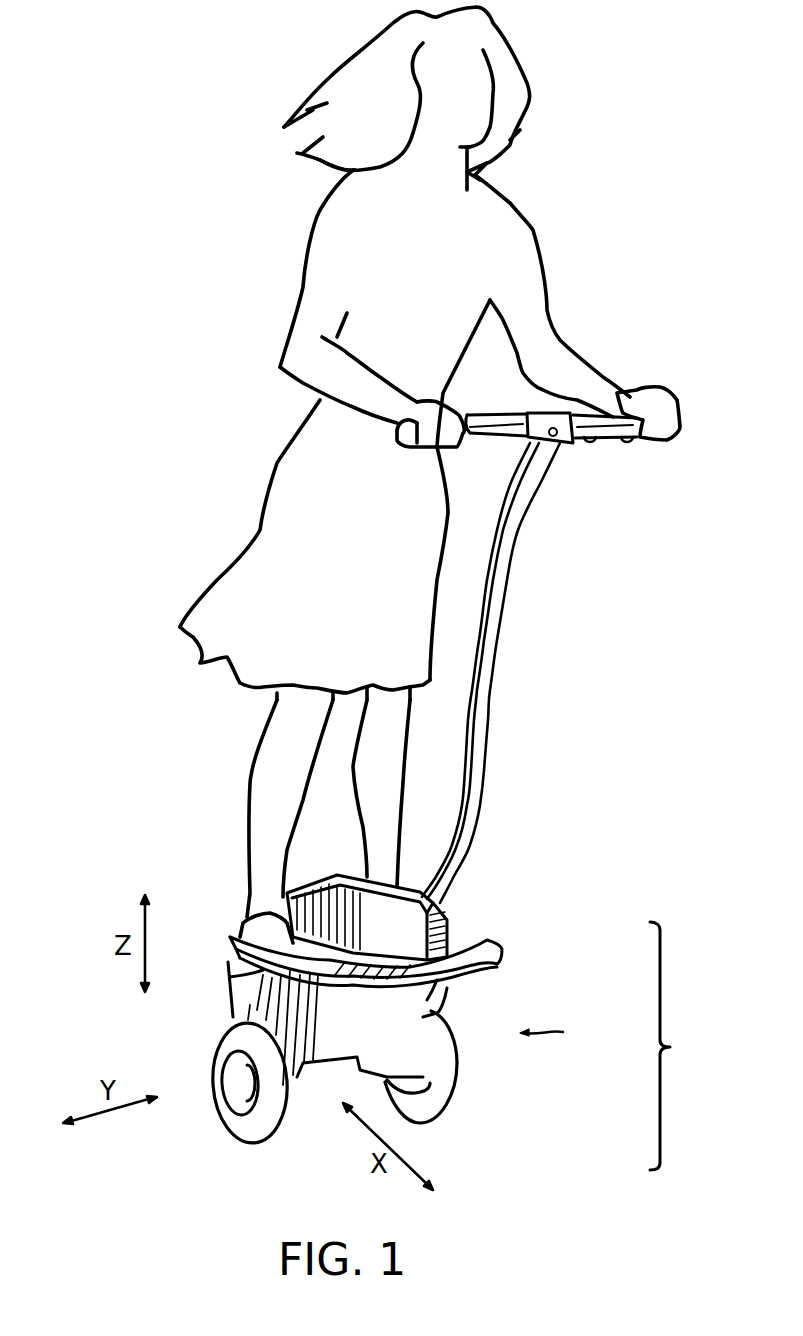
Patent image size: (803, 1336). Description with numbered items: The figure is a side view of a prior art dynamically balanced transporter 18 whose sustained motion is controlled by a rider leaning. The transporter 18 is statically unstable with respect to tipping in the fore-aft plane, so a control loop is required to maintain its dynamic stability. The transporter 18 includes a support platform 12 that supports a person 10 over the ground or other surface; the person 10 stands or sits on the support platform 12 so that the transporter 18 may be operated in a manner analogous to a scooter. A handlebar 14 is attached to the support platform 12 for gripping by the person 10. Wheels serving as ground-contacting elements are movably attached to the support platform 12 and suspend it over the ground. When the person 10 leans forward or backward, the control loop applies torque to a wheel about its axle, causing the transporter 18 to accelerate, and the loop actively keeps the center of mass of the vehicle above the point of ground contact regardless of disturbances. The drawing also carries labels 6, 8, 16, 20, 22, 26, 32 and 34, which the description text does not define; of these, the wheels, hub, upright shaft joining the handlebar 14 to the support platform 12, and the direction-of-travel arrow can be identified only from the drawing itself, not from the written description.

The transporter 6 is at (671, 1046).
The base / ground-contacting module 8 is at (230, 947).
The person 10 is at (510, 207).
The support platform 12 is at (483, 973).
The handlebar 14 is at (563, 447).
The control shaft 16 is at (500, 637).
The transporter 18 is at (120, 448).
The wheels 20 is at (257, 1140).
The wheel hub / axis 22 is at (240, 1087).
The direction of travel 26 is at (559, 1033).
The handlebar grip control 32 is at (630, 443).
The handlebar control 34 is at (600, 447).